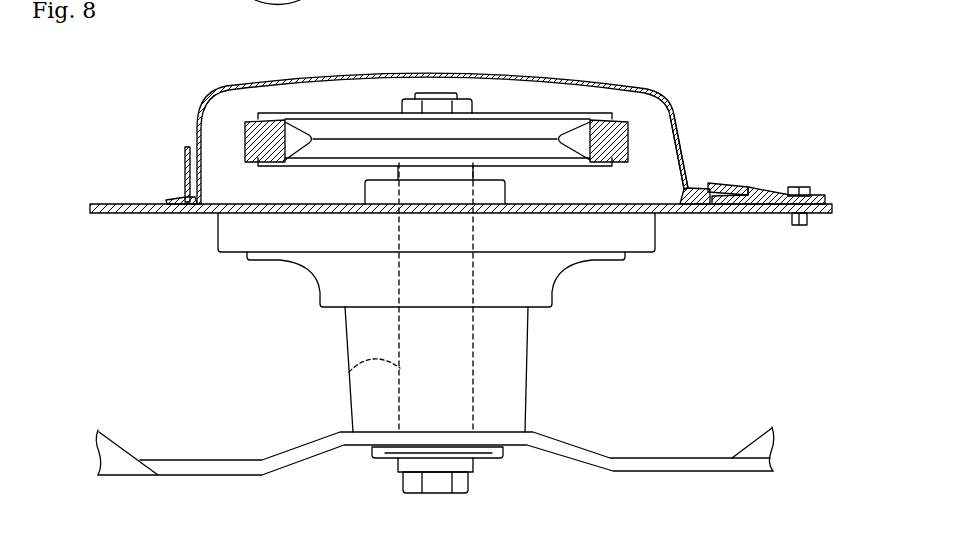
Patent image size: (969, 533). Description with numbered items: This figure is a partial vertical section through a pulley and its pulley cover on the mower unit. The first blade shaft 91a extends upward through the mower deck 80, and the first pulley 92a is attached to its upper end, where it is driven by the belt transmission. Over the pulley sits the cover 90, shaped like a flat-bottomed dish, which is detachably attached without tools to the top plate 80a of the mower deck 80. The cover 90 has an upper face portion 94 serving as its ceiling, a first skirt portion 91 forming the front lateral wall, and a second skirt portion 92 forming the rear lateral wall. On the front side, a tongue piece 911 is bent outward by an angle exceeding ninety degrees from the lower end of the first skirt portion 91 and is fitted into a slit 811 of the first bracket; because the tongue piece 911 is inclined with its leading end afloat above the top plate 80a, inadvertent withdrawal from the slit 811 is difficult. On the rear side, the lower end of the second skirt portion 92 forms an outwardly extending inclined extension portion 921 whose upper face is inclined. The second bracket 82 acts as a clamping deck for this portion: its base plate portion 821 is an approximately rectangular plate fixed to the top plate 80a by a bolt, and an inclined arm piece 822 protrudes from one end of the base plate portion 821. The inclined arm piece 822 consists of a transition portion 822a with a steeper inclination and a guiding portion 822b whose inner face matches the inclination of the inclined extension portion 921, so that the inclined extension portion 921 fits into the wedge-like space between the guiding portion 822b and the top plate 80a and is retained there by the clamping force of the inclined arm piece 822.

The mower deck 80 is at (461, 261).
The top plate 80a is at (107, 213).
The second bracket 82 is at (764, 192).
The cover 90 is at (208, 103).
The first skirt portion 91 is at (194, 137).
The first blade shaft 91a is at (347, 367).
The second skirt portion 92 is at (683, 150).
The first pulley 92a is at (545, 166).
The upper face portion 94 is at (597, 80).
The slit 811 is at (183, 165).
The base plate portion 821 is at (812, 212).
The inclined arm piece 822 is at (759, 153).
The transition portion 822a is at (770, 189).
The guiding portion 822b is at (730, 184).
The tongue piece 911 is at (168, 202).
The inclined extension portion 921 is at (718, 213).